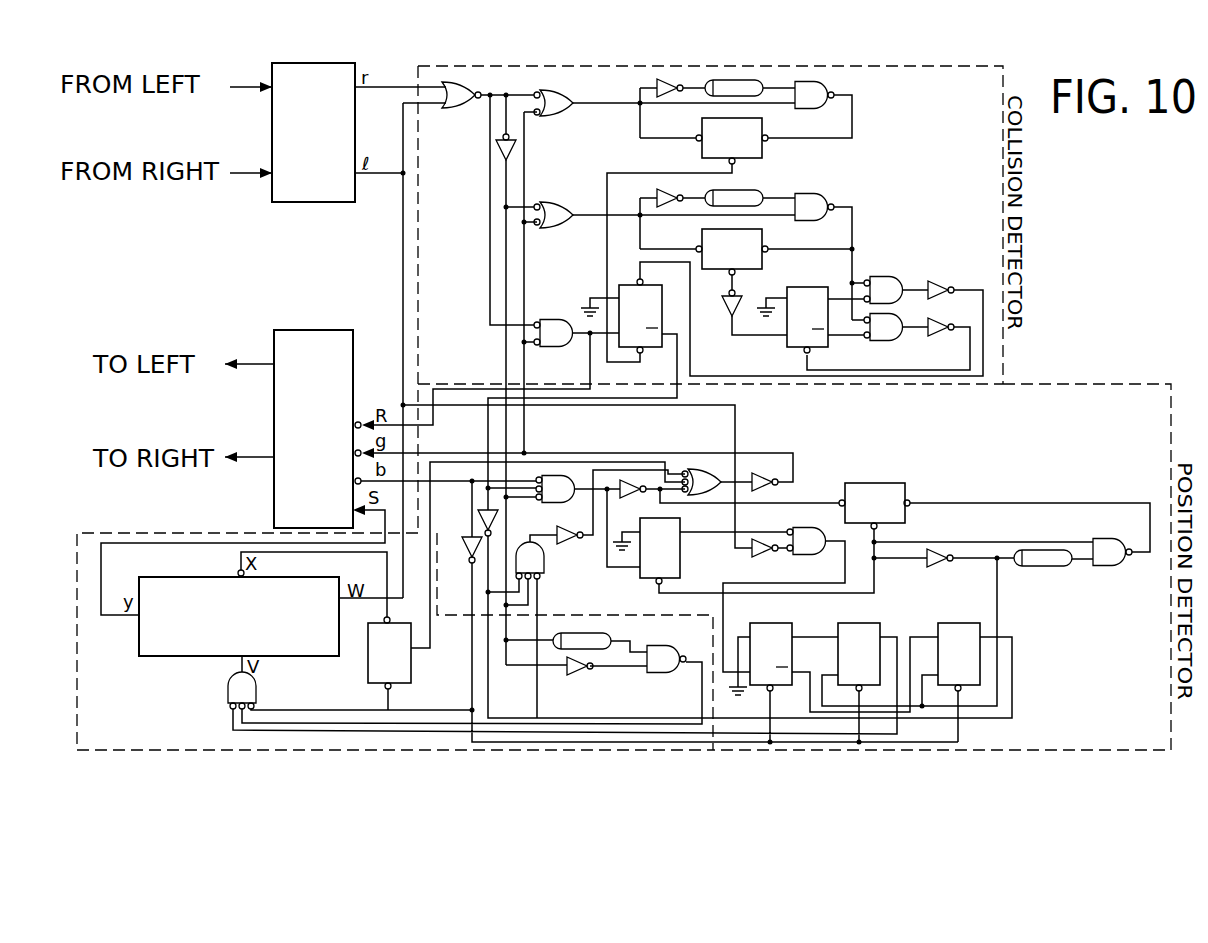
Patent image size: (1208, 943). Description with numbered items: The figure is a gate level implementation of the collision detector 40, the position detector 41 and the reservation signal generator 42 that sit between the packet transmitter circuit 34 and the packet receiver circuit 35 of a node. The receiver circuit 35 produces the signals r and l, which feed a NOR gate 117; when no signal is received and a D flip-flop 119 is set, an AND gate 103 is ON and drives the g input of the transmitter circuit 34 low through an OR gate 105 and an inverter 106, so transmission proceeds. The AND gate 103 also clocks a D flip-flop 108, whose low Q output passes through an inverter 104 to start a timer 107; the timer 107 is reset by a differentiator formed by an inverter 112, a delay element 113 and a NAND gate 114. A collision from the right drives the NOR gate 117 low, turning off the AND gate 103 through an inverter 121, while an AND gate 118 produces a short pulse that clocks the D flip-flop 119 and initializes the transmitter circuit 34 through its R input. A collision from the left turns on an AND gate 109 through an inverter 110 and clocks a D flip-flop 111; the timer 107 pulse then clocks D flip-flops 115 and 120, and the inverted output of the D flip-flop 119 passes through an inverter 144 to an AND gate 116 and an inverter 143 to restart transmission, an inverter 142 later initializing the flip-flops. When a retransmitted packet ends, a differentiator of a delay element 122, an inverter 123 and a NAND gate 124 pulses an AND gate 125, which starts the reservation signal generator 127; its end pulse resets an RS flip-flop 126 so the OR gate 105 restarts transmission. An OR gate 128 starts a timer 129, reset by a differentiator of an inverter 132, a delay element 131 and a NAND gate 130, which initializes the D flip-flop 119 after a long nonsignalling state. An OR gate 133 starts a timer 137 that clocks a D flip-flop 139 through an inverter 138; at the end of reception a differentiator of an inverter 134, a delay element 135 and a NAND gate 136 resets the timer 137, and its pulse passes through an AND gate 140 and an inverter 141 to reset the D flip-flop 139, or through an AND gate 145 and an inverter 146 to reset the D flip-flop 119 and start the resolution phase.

The packet transmitter circuit 34 is at (313, 330).
The packet receiver circuit 35 is at (313, 203).
The collision detector 40 is at (1003, 358).
The position detector 41 is at (1108, 383).
The reservation signal generator 42 is at (120, 533).
The AND gate 103 is at (557, 476).
The inverter 104 is at (628, 481).
The OR gate 105 is at (697, 469).
The inverter 106 is at (778, 485).
The timer 107 is at (877, 483).
The D flip-flop 108 is at (681, 563).
The AND gate 109 is at (805, 527).
The inverter 110 is at (771, 557).
The D flip-flop 111 is at (792, 624).
The inverter 112 is at (940, 567).
The delay element 113 is at (1045, 567).
The NAND gate 114 is at (1108, 567).
The D flip-flop 115 is at (958, 623).
The AND gate 116 is at (544, 566).
The NOR gate 117 is at (460, 109).
The AND gate 118 is at (550, 319).
The D flip-flop 119 is at (626, 284).
The D flip-flop 120 is at (880, 624).
The inverter 121 is at (518, 150).
The delay element 122 is at (596, 633).
The inverter 123 is at (570, 676).
The NAND gate 124 is at (663, 674).
The AND gate 125 is at (257, 690).
The RS flip-flop 126 is at (368, 665).
The reservation signal generator 127 is at (183, 657).
The OR gate 128 is at (573, 112).
The timer 129 is at (765, 120).
The NAND gate 130 is at (815, 82).
The delay element 131 is at (758, 80).
The inverter 132 is at (657, 82).
The OR gate 133 is at (562, 204).
The inverter 134 is at (660, 189).
The delay element 135 is at (760, 190).
The NAND gate 136 is at (818, 194).
The timer 137 is at (765, 232).
The inverter 138 is at (742, 298).
The D flip-flop 139 is at (787, 344).
The AND gate 140 is at (885, 277).
The inverter 141 is at (938, 281).
The inverter 142 is at (463, 538).
The inverter 143 is at (566, 544).
The inverter 144 is at (500, 517).
The AND gate 145 is at (885, 341).
The inverter 146 is at (938, 336).